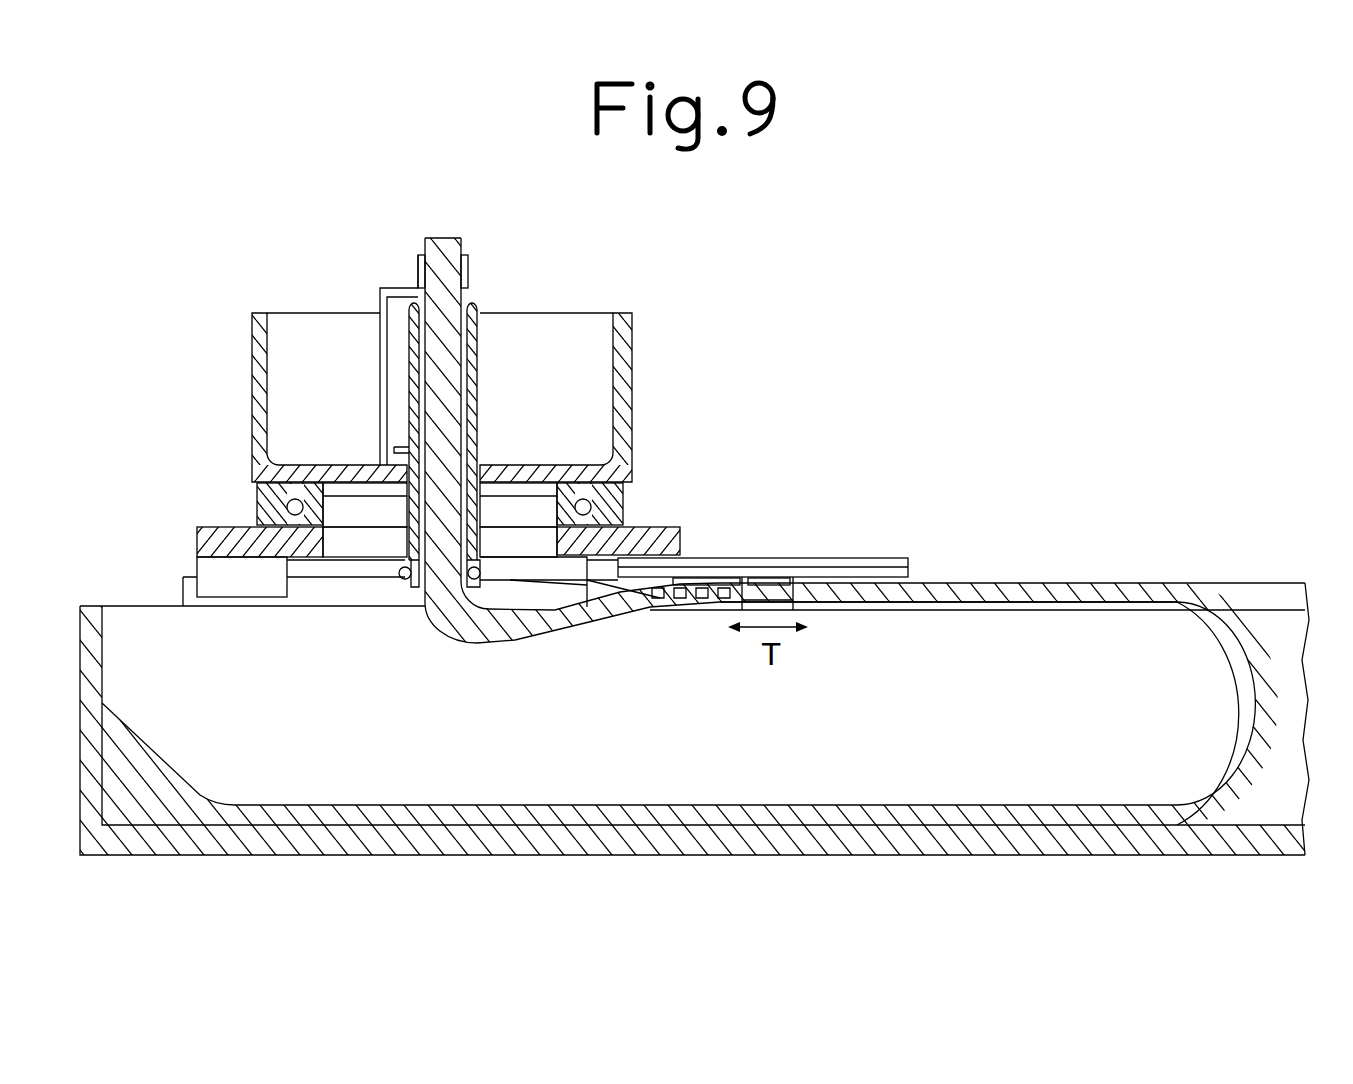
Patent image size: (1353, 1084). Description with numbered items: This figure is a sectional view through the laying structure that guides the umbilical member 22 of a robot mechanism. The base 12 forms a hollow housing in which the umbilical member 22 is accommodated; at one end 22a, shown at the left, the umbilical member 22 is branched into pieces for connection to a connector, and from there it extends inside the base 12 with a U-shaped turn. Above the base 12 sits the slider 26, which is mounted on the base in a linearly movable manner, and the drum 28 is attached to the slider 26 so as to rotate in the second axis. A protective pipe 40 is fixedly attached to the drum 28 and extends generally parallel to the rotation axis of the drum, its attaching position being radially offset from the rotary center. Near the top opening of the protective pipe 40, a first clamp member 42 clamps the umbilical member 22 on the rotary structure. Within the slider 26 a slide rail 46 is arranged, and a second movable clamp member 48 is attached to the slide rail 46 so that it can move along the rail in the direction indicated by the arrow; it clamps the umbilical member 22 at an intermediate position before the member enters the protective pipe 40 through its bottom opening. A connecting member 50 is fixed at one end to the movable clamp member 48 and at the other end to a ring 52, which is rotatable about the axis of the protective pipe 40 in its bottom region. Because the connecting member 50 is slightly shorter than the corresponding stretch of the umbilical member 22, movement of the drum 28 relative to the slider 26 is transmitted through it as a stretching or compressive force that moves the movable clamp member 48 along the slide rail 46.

The base 12 is at (748, 857).
The umbilical member 22 is at (1262, 688).
The one end 22a is at (157, 773).
The slider 26 is at (197, 535).
The drum 28 is at (252, 363).
The protective pipe 40 is at (480, 343).
The first clamp member 42 is at (472, 260).
The slide rail 46 is at (870, 558).
The second movable clamp member 48 is at (768, 600).
The connecting member 50 is at (643, 537).
The ring 52 is at (400, 575).